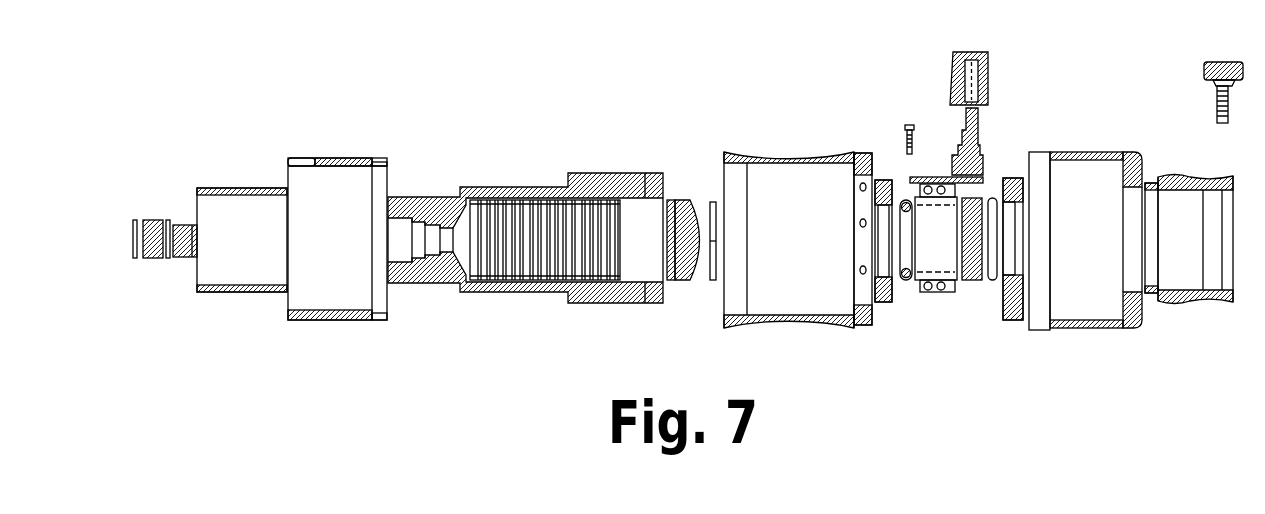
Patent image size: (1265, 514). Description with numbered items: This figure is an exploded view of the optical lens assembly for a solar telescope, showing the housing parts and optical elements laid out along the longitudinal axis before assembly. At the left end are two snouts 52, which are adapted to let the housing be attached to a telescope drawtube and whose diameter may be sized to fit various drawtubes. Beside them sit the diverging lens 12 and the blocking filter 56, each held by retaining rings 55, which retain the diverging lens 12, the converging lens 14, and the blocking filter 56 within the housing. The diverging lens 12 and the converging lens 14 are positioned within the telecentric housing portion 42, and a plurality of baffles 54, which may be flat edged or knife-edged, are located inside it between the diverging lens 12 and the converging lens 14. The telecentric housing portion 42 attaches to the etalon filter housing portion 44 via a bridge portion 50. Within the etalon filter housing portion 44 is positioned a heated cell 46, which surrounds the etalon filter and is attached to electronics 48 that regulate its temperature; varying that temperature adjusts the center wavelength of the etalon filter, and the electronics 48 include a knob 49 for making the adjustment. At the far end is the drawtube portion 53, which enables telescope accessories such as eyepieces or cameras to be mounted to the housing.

The diverging lens 12 is at (184, 258).
The converging lens 14 is at (690, 281).
The telecentric housing portion 42 is at (598, 174).
The etalon filter housing portion 44 is at (1080, 152).
The heated cell 46 is at (918, 196).
The electronics 48 is at (965, 128).
The knob 49 is at (954, 58).
The bridge portion 50 is at (738, 152).
The snouts 52 is at (214, 188).
The drawtube portion 53 is at (1180, 303).
The baffles 54 is at (550, 196).
The retaining rings 55 is at (172, 218).
The blocking filter 56 is at (149, 259).